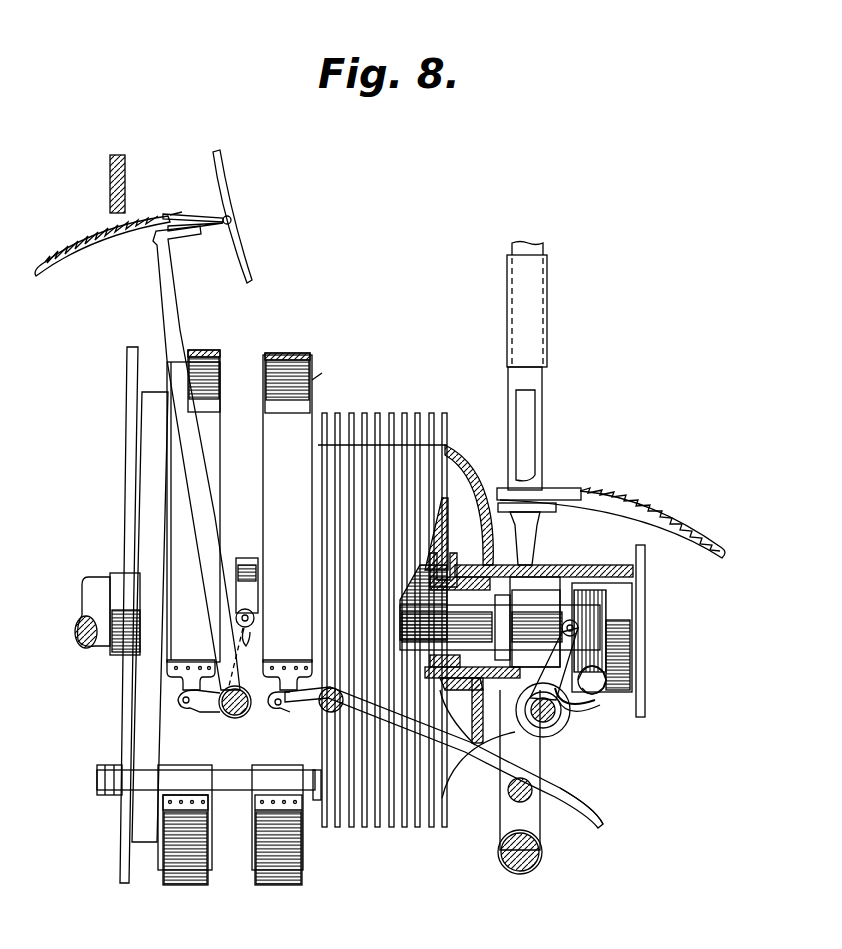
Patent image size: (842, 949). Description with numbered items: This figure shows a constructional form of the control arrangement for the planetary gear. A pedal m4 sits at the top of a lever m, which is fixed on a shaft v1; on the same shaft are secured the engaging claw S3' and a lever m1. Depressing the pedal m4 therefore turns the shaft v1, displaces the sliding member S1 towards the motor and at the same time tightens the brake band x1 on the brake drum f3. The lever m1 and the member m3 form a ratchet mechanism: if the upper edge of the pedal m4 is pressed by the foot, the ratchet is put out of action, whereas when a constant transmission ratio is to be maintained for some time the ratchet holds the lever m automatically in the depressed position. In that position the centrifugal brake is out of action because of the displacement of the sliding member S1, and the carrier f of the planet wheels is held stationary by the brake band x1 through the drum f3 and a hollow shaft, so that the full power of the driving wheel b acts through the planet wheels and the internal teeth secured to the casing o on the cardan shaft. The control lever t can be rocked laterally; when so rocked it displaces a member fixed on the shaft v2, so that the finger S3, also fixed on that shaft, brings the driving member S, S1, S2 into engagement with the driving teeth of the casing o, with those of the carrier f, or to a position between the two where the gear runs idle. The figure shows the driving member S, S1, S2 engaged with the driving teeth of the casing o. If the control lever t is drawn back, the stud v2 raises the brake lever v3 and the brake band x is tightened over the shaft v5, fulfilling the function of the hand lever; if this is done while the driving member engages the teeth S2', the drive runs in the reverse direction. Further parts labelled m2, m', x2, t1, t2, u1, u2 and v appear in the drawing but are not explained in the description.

The lever m is at (196, 458).
The lever m1 is at (80, 258).
The spring m2 is at (200, 205).
The ratchet mechanism member m3 is at (126, 170).
The pedal m4 is at (247, 250).
The hook m' is at (199, 712).
The brake band x is at (305, 355).
The brake band x1 is at (215, 355).
The plate x2 is at (636, 600).
The carrier of the planet wheels f is at (438, 520).
The brake drum f3 is at (222, 385).
The casing o is at (300, 858).
The driving member S is at (575, 575).
The sliding member S1 is at (247, 545).
The driving member part S2 is at (536, 628).
The finger S3 is at (583, 696).
The teeth S2' is at (451, 560).
The engaging claw S3' is at (259, 649).
The control lever t is at (513, 385).
The toothed segment t1 is at (630, 500).
The handle slot t2 is at (528, 405).
The support u1 is at (455, 680).
The coil u2 is at (634, 588).
The driving wheel b is at (425, 625).
The arm v is at (504, 782).
The shaft v1 is at (506, 793).
The shaft v2 is at (545, 738).
The brake lever v3 is at (580, 795).
The shaft v5 is at (345, 705).